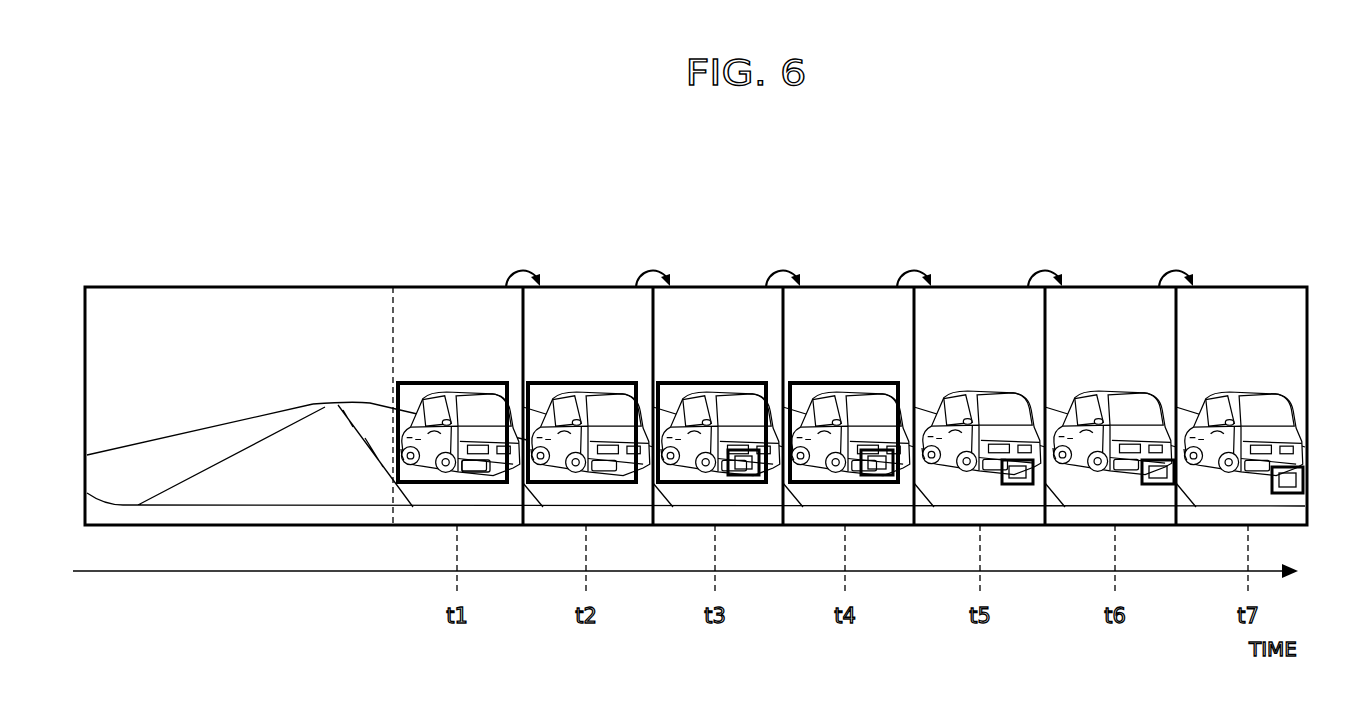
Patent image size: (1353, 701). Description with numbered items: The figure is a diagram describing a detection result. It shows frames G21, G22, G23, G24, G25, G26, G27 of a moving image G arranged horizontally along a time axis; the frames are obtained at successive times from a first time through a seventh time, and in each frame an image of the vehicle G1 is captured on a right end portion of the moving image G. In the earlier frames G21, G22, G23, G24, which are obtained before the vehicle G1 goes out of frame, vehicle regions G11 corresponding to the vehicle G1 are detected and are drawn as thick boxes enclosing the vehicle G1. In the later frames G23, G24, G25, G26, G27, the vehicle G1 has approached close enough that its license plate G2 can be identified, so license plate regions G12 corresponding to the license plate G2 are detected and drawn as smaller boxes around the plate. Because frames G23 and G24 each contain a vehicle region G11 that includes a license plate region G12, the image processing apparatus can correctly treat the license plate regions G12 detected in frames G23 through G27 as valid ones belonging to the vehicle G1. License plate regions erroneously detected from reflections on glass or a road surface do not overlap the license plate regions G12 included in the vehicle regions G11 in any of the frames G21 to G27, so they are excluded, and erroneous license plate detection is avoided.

The moving image G is at (233, 287).
The vehicle G1 is at (443, 393).
The vehicle region G11 is at (890, 383).
The license plate region G12 is at (745, 478).
The license plate G2 is at (470, 460).
The frame G21 is at (456, 287).
The frame G22 is at (574, 287).
The frame G23 is at (697, 287).
The frame G24 is at (846, 287).
The frame G25 is at (970, 287).
The frame G26 is at (1114, 287).
The frame G27 is at (1252, 287).